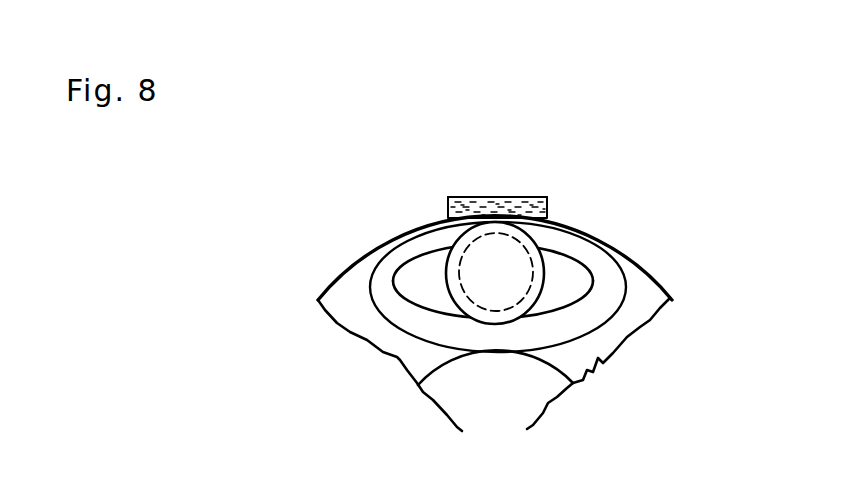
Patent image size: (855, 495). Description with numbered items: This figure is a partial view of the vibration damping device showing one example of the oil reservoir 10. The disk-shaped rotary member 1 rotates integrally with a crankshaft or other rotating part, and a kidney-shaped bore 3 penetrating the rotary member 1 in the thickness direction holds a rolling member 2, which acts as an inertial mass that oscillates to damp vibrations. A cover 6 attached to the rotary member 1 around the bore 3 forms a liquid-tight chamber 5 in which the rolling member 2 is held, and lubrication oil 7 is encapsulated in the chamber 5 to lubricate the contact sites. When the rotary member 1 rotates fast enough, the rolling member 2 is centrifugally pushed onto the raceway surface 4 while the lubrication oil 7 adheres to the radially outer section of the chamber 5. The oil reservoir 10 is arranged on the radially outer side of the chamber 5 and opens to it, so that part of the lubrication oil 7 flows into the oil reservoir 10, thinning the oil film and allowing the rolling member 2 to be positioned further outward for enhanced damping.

The rotary member 1 is at (587, 352).
The rolling member 2 is at (547, 280).
The bore 3 is at (408, 293).
The raceway surface 4 is at (436, 243).
The chamber 5 is at (383, 252).
The cover 6 is at (368, 283).
The lubrication oil 7 is at (513, 200).
The oil reservoir 10 is at (473, 196).